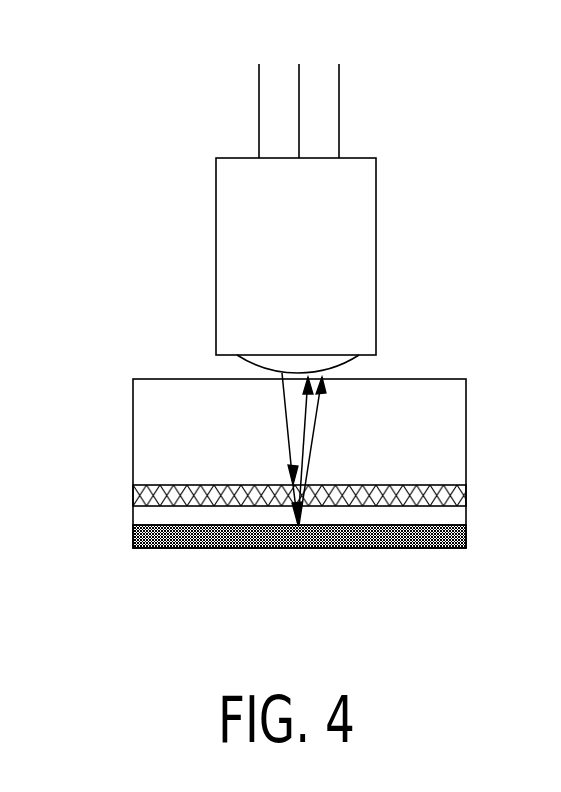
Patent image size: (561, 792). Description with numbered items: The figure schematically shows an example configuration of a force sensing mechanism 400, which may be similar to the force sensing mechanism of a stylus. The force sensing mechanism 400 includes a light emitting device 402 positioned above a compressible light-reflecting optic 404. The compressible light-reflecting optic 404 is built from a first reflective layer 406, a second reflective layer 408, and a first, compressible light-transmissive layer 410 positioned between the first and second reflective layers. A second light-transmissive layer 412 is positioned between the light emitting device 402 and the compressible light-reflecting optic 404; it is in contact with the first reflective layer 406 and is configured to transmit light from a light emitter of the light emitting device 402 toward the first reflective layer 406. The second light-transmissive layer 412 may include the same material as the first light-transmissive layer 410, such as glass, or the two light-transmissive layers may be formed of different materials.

The force sensing mechanism 400 is at (172, 62).
The light emitting device 402 is at (317, 267).
The compressible light-reflecting optic 404 is at (133, 483).
The first reflective layer 406 is at (137, 495).
The second reflective layer 408 is at (137, 543).
The first compressible light-transmissive layer 410 is at (143, 518).
The second light-transmissive layer 412 is at (155, 413).